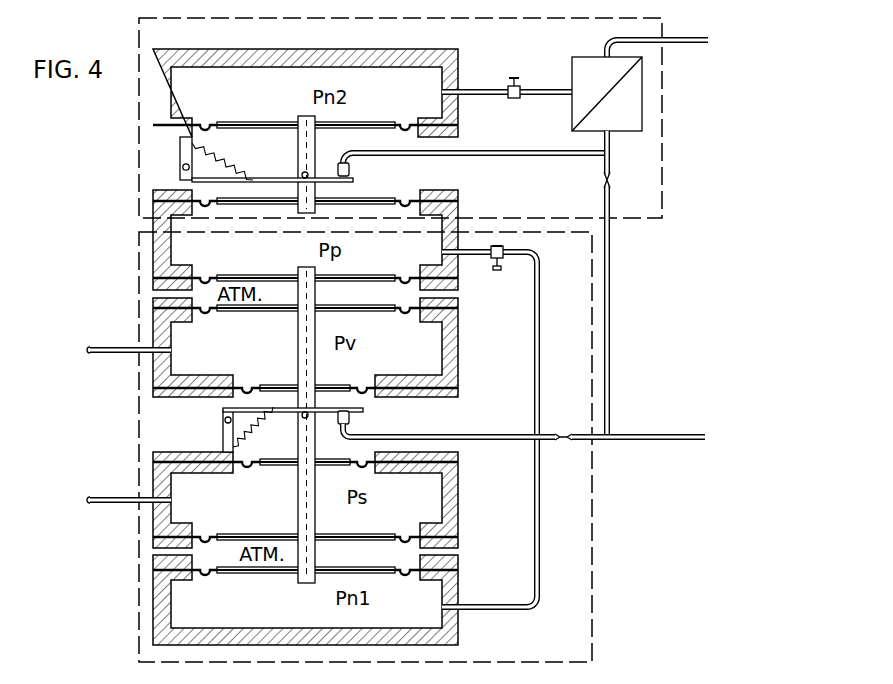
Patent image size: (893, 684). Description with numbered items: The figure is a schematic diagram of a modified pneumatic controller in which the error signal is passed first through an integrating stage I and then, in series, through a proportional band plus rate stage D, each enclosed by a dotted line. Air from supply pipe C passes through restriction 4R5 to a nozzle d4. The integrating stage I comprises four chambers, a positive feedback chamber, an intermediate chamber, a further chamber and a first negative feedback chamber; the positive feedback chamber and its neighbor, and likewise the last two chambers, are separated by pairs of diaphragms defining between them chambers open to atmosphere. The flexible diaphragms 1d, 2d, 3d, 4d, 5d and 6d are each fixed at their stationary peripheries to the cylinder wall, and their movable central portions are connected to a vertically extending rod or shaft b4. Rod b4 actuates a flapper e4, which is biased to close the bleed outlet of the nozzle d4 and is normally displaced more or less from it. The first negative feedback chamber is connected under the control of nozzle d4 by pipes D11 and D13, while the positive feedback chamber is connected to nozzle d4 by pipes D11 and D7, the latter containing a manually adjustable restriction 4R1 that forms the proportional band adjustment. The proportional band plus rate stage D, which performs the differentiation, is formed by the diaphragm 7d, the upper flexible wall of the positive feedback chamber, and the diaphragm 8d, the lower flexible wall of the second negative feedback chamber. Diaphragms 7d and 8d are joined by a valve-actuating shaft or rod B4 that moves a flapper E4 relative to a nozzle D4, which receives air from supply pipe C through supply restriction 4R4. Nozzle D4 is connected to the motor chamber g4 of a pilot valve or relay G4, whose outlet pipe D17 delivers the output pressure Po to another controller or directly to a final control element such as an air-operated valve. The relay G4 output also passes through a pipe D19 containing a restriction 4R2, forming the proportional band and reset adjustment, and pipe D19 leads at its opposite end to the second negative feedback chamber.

The proportional band plus rate stage D is at (139, 167).
The integrating stage I is at (139, 473).
The diaphragm 8d is at (207, 122).
The diaphragm 7d is at (207, 205).
The flexible diaphragm 1d is at (207, 275).
The flexible diaphragm 2d is at (207, 311).
The flexible diaphragm 3d is at (247, 385).
The flexible diaphragm 4d is at (247, 466).
The flexible diaphragm 5d is at (207, 534).
The flexible diaphragm 6d is at (207, 573).
The valve-actuating shaft or rod B4 is at (298, 150).
The rod or shaft b4 is at (298, 438).
The flapper E4 is at (326, 178).
The flapper e4 is at (328, 413).
The nozzle D4 is at (351, 170).
The nozzle d4 is at (351, 417).
The pilot valve or relay G4 is at (591, 220).
The motor chamber g4 is at (632, 135).
The pipe D19 is at (487, 89).
The outlet pipe D17 is at (688, 36).
The output pressure Po is at (730, 40).
The restriction 4R2 is at (514, 98).
The supply restriction 4R4 is at (604, 182).
The manually adjustable restriction 4R1 is at (497, 272).
The restriction 4R5 is at (562, 442).
The pipe D7 is at (535, 333).
The pipe D13 is at (535, 522).
The pipe D11 is at (505, 434).
The supply pipe C is at (694, 434).